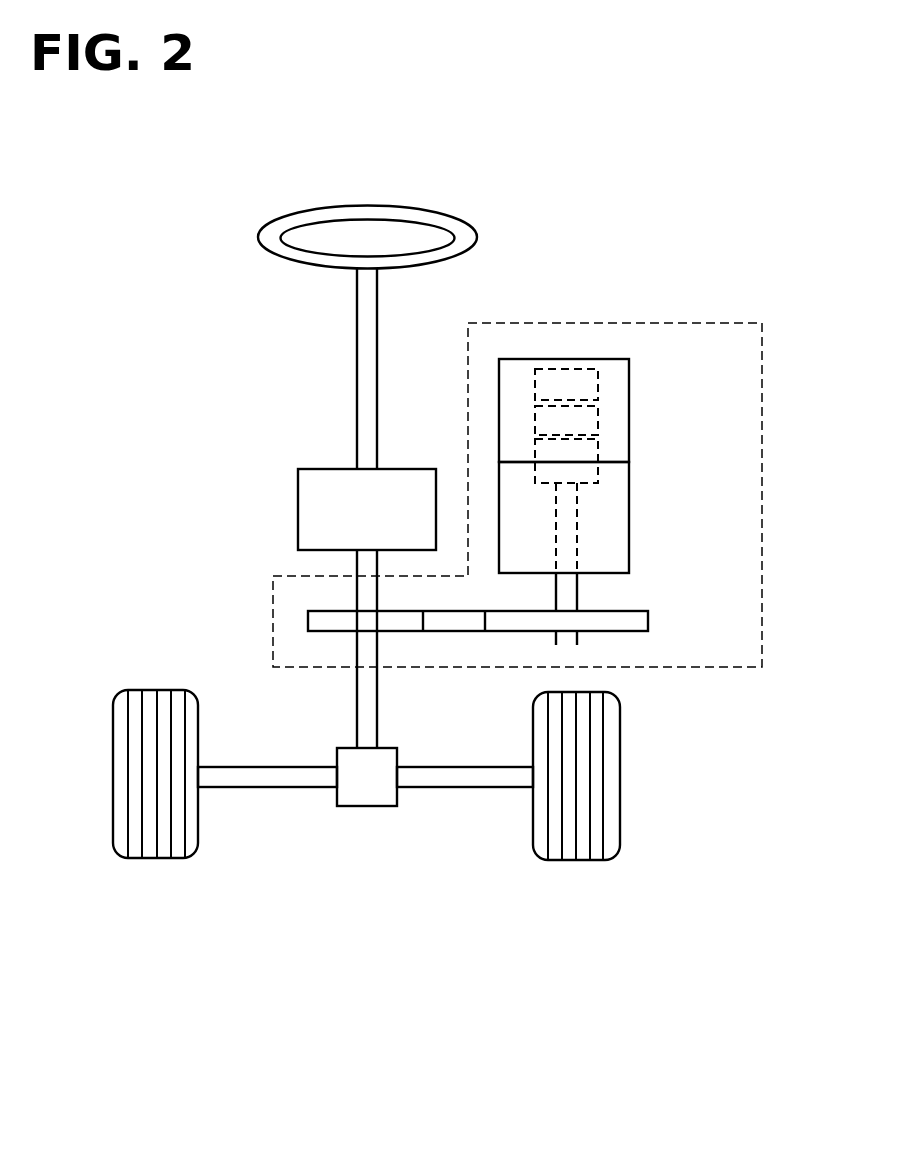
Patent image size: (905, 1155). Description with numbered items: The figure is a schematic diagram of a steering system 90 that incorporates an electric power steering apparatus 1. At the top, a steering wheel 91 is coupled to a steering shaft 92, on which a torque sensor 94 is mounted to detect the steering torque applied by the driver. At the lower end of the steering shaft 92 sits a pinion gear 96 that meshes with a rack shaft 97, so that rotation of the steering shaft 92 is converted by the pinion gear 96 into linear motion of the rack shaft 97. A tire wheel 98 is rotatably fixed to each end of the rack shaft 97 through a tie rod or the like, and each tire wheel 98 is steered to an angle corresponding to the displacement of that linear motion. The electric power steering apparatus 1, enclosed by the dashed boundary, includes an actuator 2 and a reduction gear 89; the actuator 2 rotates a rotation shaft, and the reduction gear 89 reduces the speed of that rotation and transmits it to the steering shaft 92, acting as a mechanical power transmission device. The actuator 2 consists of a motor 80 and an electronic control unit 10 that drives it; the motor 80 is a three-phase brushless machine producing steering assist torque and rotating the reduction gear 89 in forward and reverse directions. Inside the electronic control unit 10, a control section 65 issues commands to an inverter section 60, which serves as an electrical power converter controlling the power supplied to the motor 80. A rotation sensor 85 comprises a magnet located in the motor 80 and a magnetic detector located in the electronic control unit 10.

The electric power steering apparatus 1 is at (736, 323).
The actuator 2 is at (716, 337).
The electronic control unit 10 is at (597, 359).
The inverter section 60 is at (598, 414).
The control section 65 is at (598, 386).
The motor 80 is at (629, 518).
The rotation sensor 85 is at (598, 448).
The reduction gear 89 is at (648, 620).
The steering system 90 is at (328, 938).
The steering wheel 91 is at (258, 237).
The steering shaft 92 is at (357, 323).
The torque sensor 94 is at (298, 500).
The pinion gear 96 is at (358, 806).
The rack shaft 97 is at (262, 787).
The tire wheel 98 is at (171, 858).